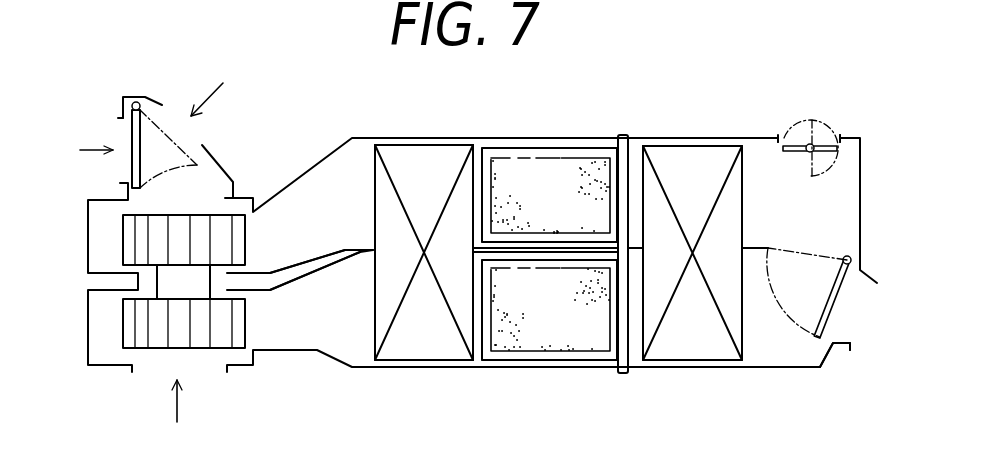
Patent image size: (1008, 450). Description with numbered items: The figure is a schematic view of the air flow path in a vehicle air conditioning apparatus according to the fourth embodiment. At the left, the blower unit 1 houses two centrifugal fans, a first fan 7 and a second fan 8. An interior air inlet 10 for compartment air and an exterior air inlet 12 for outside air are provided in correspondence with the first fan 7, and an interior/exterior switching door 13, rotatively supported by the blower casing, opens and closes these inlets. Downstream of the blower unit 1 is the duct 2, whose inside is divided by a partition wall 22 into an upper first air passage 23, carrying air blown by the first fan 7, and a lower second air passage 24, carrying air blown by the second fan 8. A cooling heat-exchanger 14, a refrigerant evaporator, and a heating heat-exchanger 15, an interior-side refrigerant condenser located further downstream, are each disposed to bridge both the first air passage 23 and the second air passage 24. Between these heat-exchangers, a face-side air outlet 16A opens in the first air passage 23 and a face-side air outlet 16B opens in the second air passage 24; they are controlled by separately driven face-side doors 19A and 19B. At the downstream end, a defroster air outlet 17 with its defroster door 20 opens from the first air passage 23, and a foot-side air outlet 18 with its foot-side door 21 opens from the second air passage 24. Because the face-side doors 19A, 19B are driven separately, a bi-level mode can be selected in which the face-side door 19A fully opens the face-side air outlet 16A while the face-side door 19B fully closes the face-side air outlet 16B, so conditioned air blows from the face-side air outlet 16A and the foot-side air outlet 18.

The blower unit 1 is at (105, 372).
The duct 2 is at (402, 368).
The first fan 7 is at (123, 233).
The second fan 8 is at (123, 318).
The interior air inlet 10 is at (123, 137).
The exterior air inlet 12 is at (193, 138).
The interior/exterior switching door 13 is at (130, 163).
The cooling heat-exchanger 14 is at (455, 365).
The heating heat-exchanger 15 is at (692, 360).
The face-side air outlet 16A is at (590, 148).
The face-side air outlet 16B is at (578, 350).
The defroster air outlet 17 is at (827, 132).
The foot-side air outlet 18 is at (853, 327).
The face-side door 19A is at (518, 147).
The face-side door 19B is at (515, 358).
The defroster door 20 is at (798, 132).
The foot-side door 21 is at (840, 297).
The partition wall 22 is at (362, 253).
The first air passage 23 is at (340, 226).
The second air passage 24 is at (340, 324).